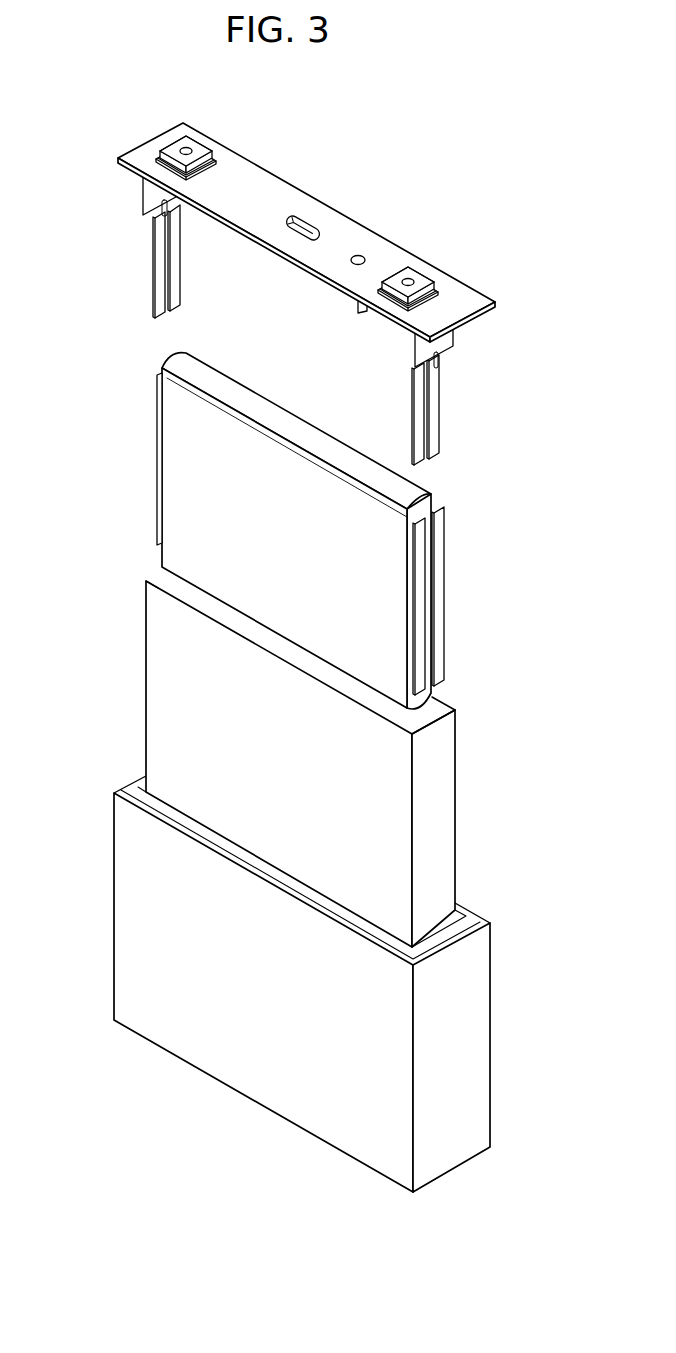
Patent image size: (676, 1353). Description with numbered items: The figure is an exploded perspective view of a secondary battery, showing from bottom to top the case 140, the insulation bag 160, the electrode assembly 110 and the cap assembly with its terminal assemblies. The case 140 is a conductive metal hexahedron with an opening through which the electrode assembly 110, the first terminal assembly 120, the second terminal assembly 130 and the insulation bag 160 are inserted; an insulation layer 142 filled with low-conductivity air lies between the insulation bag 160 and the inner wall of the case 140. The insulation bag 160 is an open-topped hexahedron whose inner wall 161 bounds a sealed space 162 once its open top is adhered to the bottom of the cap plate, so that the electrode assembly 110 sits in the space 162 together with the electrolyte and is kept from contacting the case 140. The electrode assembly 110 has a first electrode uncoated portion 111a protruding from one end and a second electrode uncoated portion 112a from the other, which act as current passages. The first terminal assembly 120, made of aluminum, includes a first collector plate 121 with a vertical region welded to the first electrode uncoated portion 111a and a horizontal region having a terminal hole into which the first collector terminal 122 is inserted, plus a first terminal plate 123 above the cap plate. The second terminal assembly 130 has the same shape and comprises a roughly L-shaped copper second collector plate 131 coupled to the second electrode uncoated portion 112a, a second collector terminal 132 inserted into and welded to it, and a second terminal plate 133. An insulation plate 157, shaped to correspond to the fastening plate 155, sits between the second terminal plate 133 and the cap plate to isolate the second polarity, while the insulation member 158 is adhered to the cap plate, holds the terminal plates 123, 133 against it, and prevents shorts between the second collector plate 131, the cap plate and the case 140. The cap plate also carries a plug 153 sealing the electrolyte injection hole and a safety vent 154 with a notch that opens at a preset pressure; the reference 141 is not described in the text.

The electrode assembly 110 is at (182, 504).
The first electrode uncoated portion 111a is at (158, 447).
The second electrode uncoated portion 112a is at (420, 573).
The first terminal assembly 120 is at (168, 135).
The first collector plate 121 is at (150, 205).
The first collector terminal 122 is at (186, 147).
The first terminal plate 123 is at (203, 154).
The second terminal assembly 130 is at (408, 258).
The second collector plate 131 is at (430, 415).
The second collector terminal 132 is at (411, 279).
The second terminal plate 133 is at (431, 285).
The case 140 is at (475, 1043).
The case opening 141 is at (477, 961).
The insulation layer 142 is at (457, 906).
The plug 153 is at (359, 255).
The safety vent 154 is at (313, 220).
The fastening plate 155 is at (437, 296).
The insulation plate 157 is at (205, 170).
The insulation member 158 is at (146, 181).
The insulation bag 160 is at (450, 806).
The inner wall 161 is at (439, 725).
The space 162 is at (165, 575).